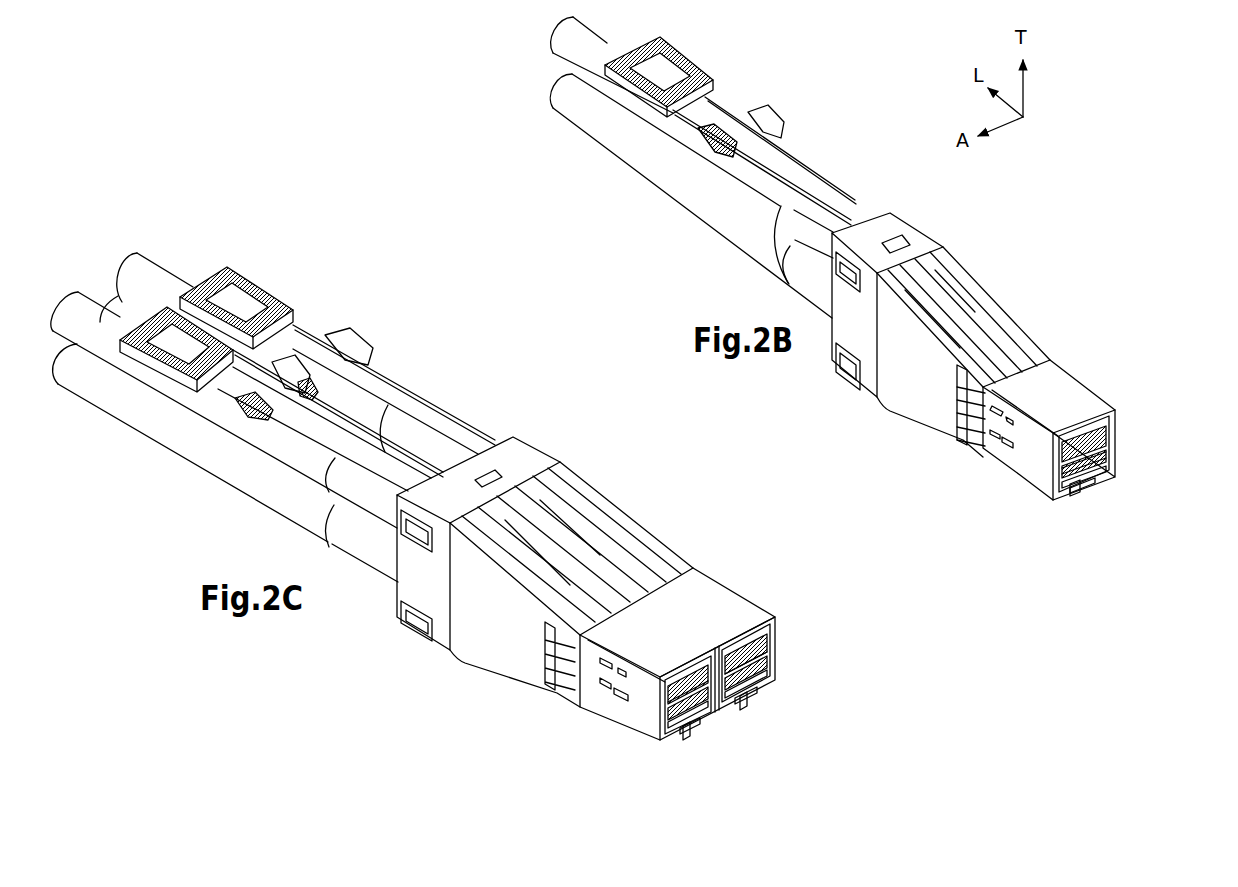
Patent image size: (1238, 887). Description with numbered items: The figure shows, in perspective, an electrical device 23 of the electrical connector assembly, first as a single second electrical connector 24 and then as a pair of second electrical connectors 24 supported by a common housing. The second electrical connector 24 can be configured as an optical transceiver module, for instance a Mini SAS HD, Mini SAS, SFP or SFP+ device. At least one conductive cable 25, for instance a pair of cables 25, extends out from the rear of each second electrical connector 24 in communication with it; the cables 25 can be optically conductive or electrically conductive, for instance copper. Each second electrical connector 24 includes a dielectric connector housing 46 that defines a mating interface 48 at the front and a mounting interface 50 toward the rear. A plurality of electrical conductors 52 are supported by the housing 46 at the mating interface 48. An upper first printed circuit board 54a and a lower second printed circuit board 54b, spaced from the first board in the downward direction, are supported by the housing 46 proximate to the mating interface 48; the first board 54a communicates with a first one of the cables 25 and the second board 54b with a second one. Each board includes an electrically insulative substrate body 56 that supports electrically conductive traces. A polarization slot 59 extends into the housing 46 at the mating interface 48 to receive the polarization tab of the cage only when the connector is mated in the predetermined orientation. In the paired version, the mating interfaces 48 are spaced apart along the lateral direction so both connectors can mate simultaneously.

In FIG. 2B, the electrical device 23 is at (835, 118).
In FIG. 2C, the electrical device 23 is at (204, 245).
In FIG. 2B, the second electrical connector 24 is at (1000, 282).
In FIG. 2C, the second electrical connector 24 is at (613, 487).
In FIG. 2B, the conductive cable 25 is at (572, 100).
In FIG. 2C, the conductive cable 25 is at (142, 282).
In FIG. 2B, the connector housing 46 is at (1067, 353).
In FIG. 2C, the connector housing 46 is at (710, 568).
In FIG. 2B, the mating interface 48 is at (1120, 443).
In FIG. 2C, the mating interface 48 is at (780, 630).
In FIG. 2B, the mounting interface 50 is at (887, 213).
In FIG. 2C, the mounting interface 50 is at (500, 433).
In FIG. 2B, the electrical conductors 52 is at (1087, 417).
In FIG. 2C, the electrical conductors 52 is at (740, 630).
In FIG. 2B, the first printed circuit board 54a is at (1067, 500).
In FIG. 2C, the first printed circuit board 54a is at (777, 648).
In FIG. 2B, the second printed circuit board 54b is at (1100, 485).
In FIG. 2C, the second printed circuit board 54b is at (757, 693).
In FIG. 2B, the substrate body 56 is at (1053, 453).
In FIG. 2C, the substrate body 56 is at (773, 670).
In FIG. 2B, the polarization slot 59 is at (1077, 485).
In FIG. 2C, the polarization slot 59 is at (743, 697).